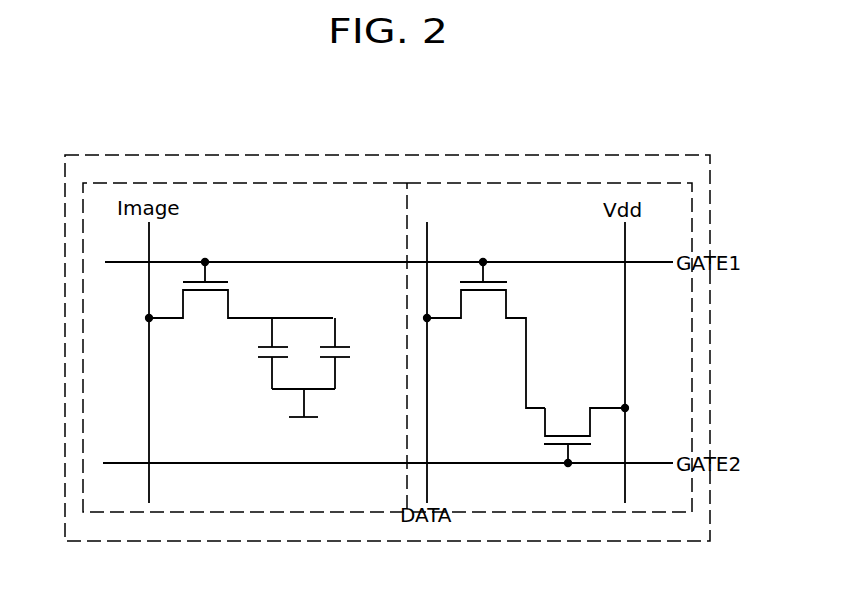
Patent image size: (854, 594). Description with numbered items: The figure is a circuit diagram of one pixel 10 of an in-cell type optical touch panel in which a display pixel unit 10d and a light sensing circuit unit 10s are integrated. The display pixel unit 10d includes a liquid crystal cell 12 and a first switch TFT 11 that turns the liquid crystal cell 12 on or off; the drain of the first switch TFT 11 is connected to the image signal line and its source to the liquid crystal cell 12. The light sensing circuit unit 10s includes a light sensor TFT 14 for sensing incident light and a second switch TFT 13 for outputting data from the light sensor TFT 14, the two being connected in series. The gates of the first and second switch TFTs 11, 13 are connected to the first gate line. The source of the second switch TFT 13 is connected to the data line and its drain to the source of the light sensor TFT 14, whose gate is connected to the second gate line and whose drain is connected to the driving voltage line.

The pixel 10 is at (386, 155).
The display pixel unit 10d is at (249, 183).
The light sensing circuit unit 10s is at (544, 183).
The first switch TFT 11 is at (238, 288).
The liquid crystal cell 12 is at (262, 373).
The second switch TFT 13 is at (515, 287).
The light sensor TFT 14 is at (538, 438).